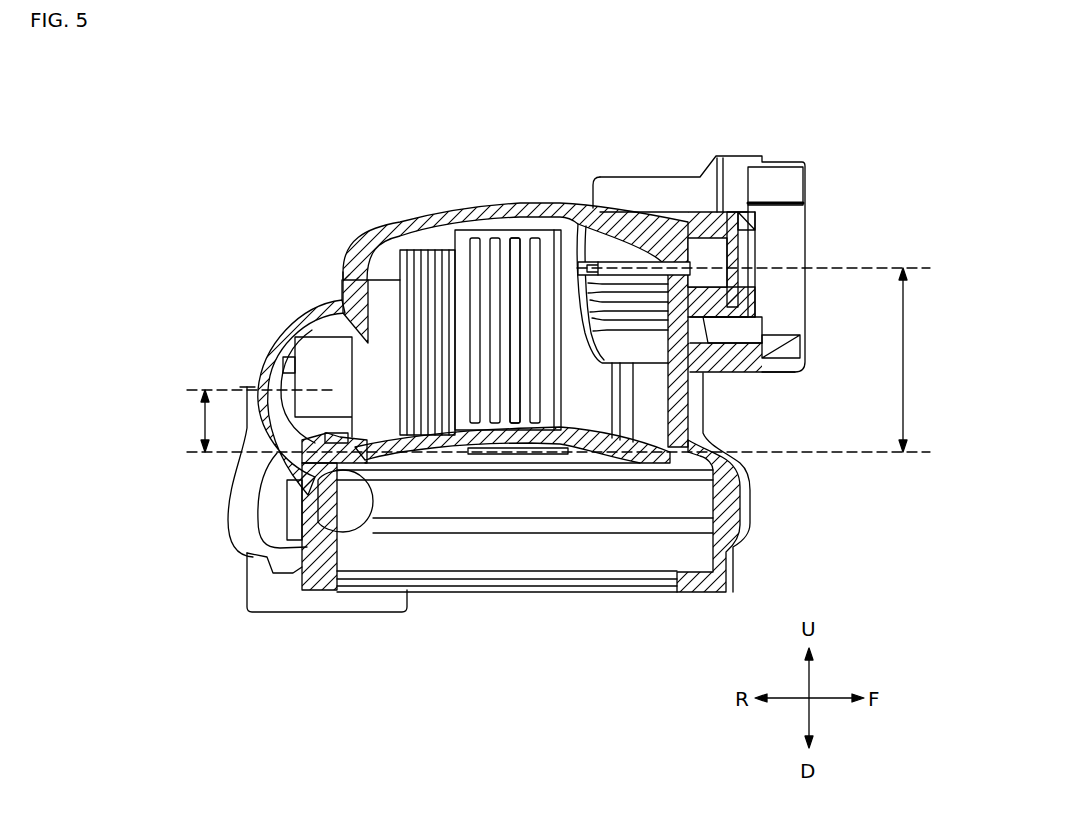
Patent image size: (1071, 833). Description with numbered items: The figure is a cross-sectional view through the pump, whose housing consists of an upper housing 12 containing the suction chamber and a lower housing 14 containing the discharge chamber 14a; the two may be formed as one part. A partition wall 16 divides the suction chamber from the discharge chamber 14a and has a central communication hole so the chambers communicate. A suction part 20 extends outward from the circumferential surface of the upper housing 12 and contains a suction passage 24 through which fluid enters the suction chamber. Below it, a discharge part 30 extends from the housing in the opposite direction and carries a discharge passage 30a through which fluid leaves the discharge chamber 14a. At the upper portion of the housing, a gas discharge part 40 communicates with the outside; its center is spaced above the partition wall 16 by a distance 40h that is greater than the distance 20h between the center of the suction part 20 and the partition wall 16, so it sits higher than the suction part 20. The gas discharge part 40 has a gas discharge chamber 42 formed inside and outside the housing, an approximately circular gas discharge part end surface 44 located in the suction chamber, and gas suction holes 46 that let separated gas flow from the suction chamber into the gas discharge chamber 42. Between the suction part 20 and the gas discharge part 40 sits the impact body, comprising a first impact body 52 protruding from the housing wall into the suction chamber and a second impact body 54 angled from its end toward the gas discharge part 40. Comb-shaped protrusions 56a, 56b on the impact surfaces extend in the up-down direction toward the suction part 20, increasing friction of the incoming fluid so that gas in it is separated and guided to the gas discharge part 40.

The upper housing 12 is at (343, 293).
The lower housing 14 is at (317, 557).
The discharge chamber 14a is at (522, 498).
The partition wall 16 is at (585, 447).
The suction part 20 is at (253, 382).
The distance 20h is at (245, 421).
The suction passage 24 is at (322, 362).
The discharge part 30 is at (253, 557).
The discharge passage 30a is at (332, 500).
The gas discharge part 40 is at (654, 187).
The distance 40h is at (566, 360).
The gas discharge chamber 42 is at (776, 256).
The gas discharge part end surface 44 is at (597, 250).
The gas suction holes 46 is at (633, 267).
The first impact body 52 is at (447, 243).
The second impact body 54 is at (513, 233).
The protrusion 56a is at (420, 317).
The protrusion 56b is at (495, 253).